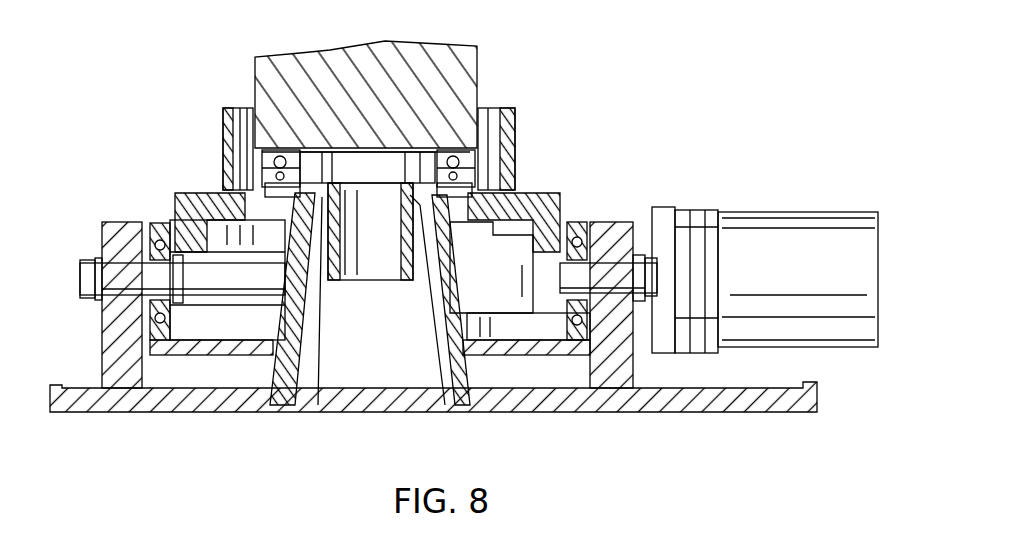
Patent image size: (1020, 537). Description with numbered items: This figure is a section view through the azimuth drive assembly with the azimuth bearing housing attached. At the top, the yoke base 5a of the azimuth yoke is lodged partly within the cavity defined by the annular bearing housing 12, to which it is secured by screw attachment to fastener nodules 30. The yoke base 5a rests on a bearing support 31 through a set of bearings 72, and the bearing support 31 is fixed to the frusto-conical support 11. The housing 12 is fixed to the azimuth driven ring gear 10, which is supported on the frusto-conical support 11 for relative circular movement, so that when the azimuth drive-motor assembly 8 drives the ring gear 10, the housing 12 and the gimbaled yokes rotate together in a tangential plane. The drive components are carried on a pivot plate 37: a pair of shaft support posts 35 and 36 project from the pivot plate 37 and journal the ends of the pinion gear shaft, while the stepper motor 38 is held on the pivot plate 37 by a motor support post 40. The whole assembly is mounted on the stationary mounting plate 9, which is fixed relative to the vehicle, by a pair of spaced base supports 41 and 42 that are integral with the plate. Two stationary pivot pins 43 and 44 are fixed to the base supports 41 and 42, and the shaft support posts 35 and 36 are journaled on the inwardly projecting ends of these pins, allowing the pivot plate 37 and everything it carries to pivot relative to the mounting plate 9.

The yoke base 5a is at (270, 75).
The annular bearing housing 12 is at (515, 123).
The fastener nodules 30 is at (268, 165).
The bearings 72 is at (268, 170).
The bearing support 31 is at (332, 247).
The azimuth driven ring gear 10 is at (540, 195).
The frusto-conical support 11 is at (272, 362).
The pivot plate 37 is at (212, 355).
The shaft support post 35 is at (157, 228).
The stationary pivot pin 43 is at (127, 273).
The base support 41 is at (117, 363).
The mounting plate 9 is at (205, 412).
The azimuth drive-motor assembly 8 is at (614, 290).
The shaft support post 36 is at (576, 343).
The stationary pivot pin 44 is at (617, 273).
The base support 42 is at (610, 353).
The motor support post 40 is at (667, 210).
The stepper motor 38 is at (763, 223).